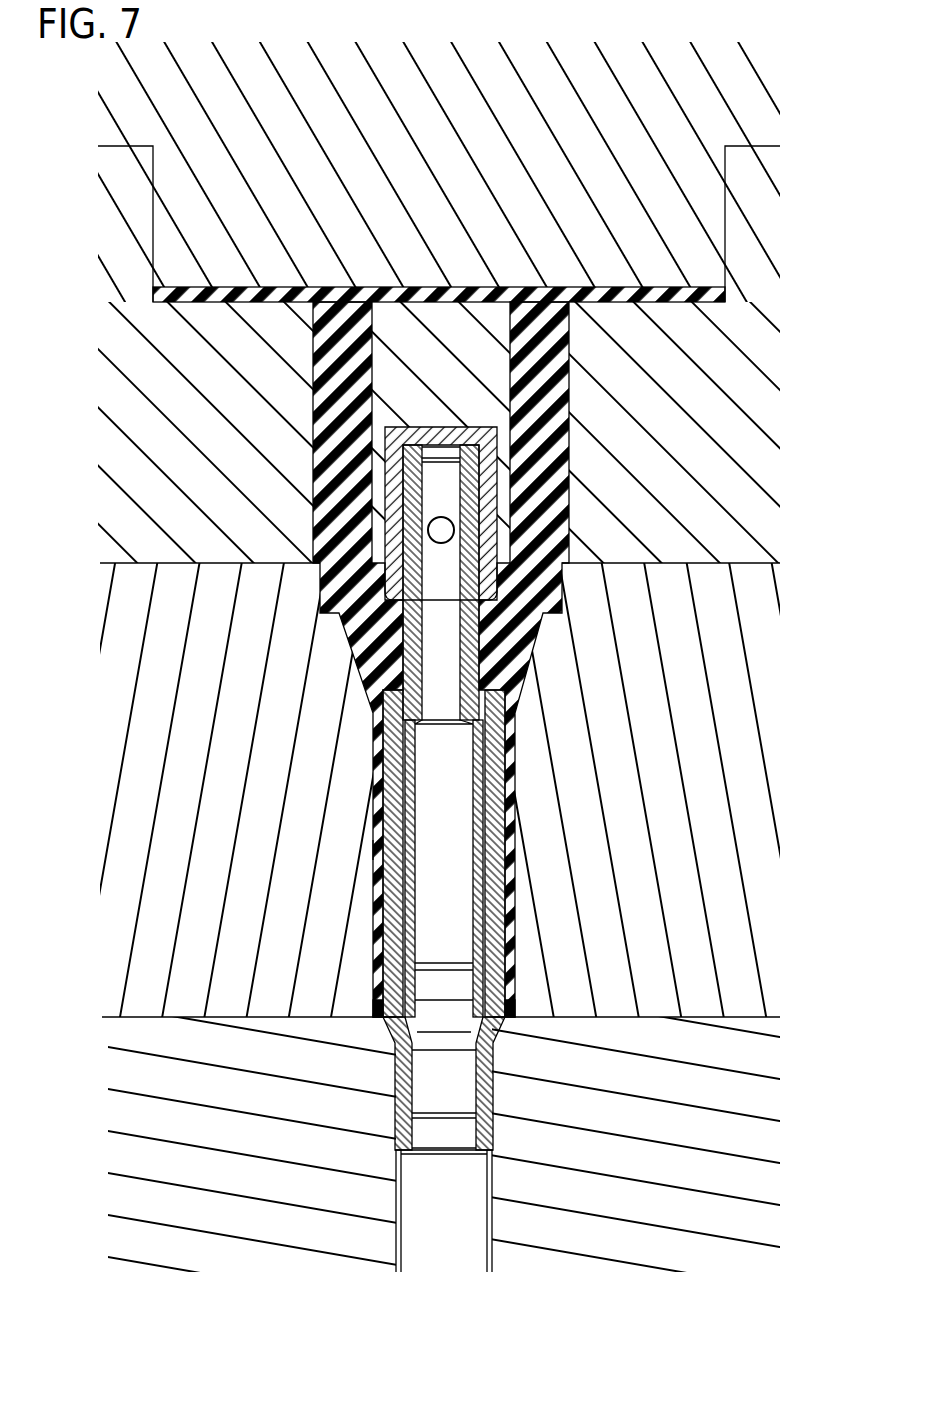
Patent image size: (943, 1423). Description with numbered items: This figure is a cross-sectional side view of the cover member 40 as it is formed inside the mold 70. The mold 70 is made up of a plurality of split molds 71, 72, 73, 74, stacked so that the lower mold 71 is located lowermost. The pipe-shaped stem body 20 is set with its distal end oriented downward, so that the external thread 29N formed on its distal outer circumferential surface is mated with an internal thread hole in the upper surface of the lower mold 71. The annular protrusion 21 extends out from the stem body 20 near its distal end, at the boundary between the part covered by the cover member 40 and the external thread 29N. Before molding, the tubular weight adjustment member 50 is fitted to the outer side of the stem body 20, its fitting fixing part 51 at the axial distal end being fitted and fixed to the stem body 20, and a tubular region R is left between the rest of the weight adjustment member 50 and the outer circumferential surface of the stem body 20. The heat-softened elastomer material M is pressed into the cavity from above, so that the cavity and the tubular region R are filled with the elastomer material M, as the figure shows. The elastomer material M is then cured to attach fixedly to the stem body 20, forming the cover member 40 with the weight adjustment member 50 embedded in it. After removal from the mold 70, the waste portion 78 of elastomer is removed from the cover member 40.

The stem body 20 is at (358, 671).
The cover member 40 is at (347, 697).
The weight adjustment member 50 is at (358, 790).
The tubular region R is at (366, 847).
The fitting fixing part 51 is at (366, 964).
The annular protrusion 21 is at (370, 1024).
The external thread 29N is at (385, 1106).
The split mold 74 is at (693, 207).
The elastomer material M is at (712, 294).
The mold 70 is at (758, 370).
The split mold 73 is at (710, 483).
The waste portion 78 is at (545, 500).
The split mold 72 is at (718, 826).
The lower mold 71 is at (685, 1123).